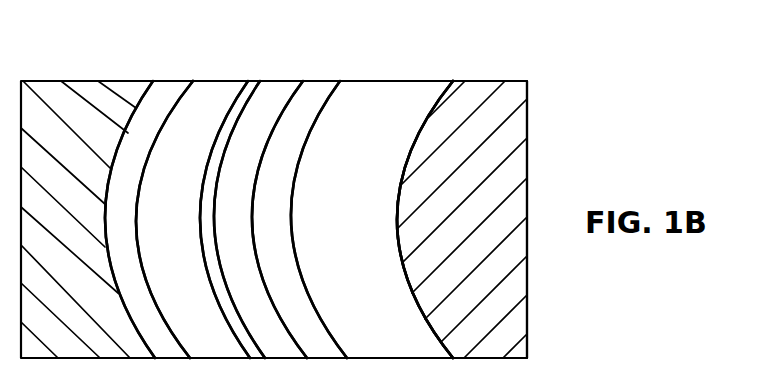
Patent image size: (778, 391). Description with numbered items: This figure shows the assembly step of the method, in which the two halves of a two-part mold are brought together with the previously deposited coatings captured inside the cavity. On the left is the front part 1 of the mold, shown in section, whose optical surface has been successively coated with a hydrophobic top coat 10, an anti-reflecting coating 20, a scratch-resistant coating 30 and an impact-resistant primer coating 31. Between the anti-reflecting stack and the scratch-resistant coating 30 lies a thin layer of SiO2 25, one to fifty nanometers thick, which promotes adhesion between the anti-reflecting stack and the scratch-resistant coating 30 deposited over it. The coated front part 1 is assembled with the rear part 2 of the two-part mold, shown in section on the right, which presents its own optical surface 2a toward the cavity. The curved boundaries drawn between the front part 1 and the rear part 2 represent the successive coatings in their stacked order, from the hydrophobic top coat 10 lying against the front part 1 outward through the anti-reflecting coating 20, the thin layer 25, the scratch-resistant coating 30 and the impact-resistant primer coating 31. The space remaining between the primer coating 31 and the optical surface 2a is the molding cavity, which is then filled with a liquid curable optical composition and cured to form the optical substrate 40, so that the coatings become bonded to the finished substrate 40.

The front part 1 is at (88, 88).
The rear part 2 is at (525, 79).
The optical surface 2a is at (402, 112).
The hydrophobic top coat 10 is at (167, 85).
The anti-reflecting coating 20 is at (218, 87).
The thin layer of SiO2 25 is at (262, 85).
The scratch-resistant coating 30 is at (280, 85).
The impact-resistant primer coating 31 is at (322, 85).
The optical substrate 40 is at (367, 95).